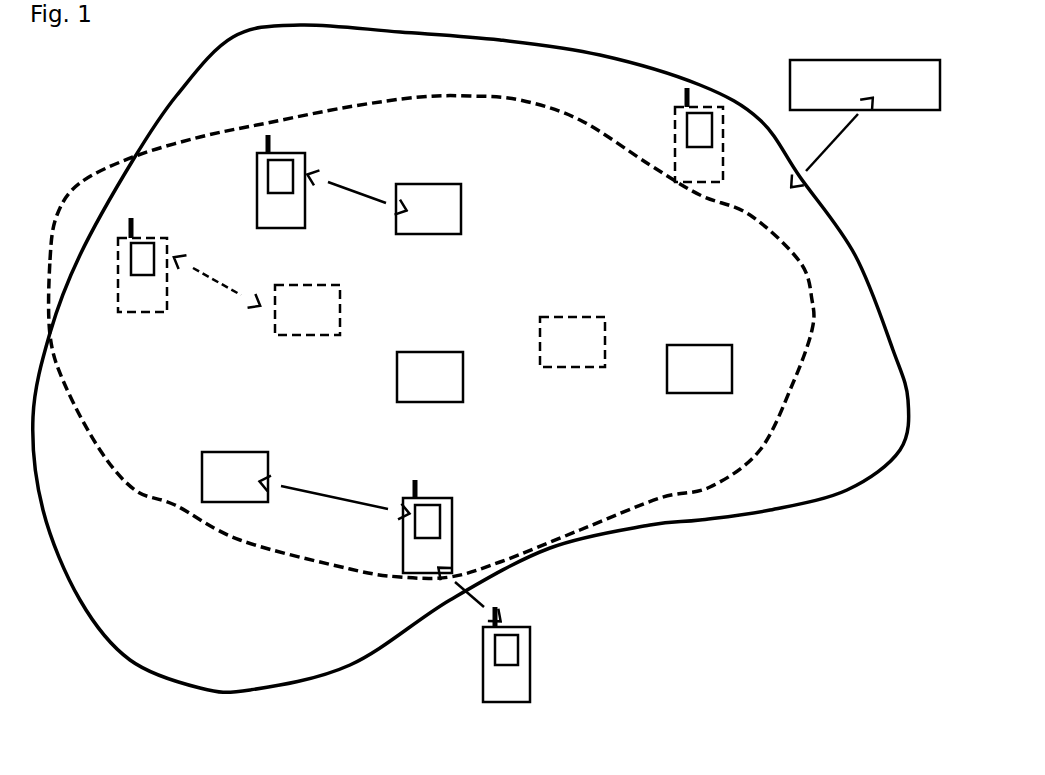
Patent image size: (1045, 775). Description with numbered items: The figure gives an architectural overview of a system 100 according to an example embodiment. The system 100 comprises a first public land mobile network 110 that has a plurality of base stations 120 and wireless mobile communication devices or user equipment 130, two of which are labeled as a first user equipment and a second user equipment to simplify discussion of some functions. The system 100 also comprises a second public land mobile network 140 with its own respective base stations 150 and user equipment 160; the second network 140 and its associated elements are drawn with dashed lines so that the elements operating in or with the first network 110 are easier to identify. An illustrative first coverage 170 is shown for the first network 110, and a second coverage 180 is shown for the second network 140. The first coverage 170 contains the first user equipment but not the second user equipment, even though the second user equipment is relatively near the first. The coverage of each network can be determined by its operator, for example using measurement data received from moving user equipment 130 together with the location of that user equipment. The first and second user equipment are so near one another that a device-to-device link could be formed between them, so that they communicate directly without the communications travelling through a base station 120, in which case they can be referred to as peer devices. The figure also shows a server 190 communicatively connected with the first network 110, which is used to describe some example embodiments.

The system 100 is at (84, 79).
The first public land mobile network 110 is at (471, 384).
The base stations 120 is at (422, 184).
The user equipment 130 is at (260, 158).
The second public land mobile network 140 is at (431, 337).
The base stations 150 is at (302, 286).
The user equipment 160 is at (143, 238).
The first coverage 170 is at (205, 689).
The second coverage 180 is at (134, 478).
The server 190 is at (870, 62).